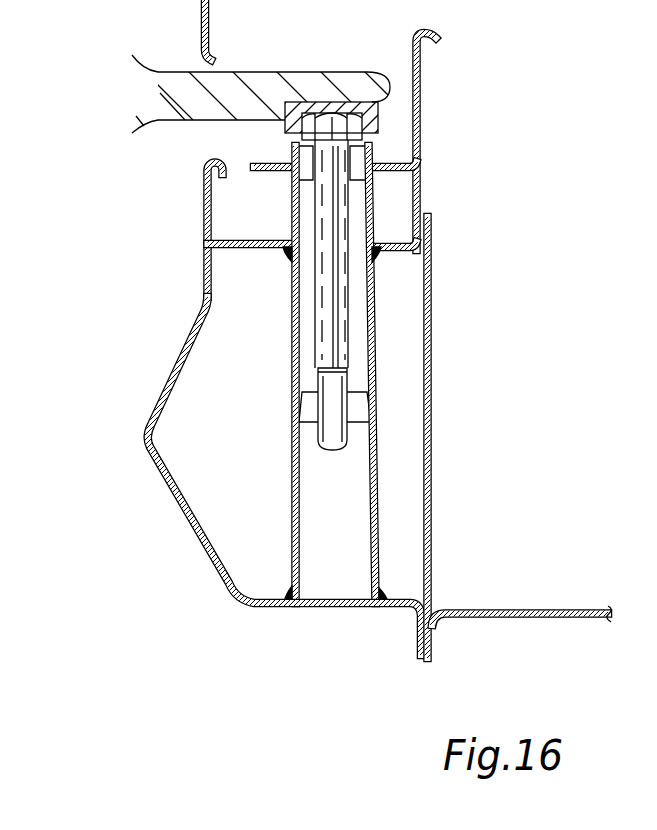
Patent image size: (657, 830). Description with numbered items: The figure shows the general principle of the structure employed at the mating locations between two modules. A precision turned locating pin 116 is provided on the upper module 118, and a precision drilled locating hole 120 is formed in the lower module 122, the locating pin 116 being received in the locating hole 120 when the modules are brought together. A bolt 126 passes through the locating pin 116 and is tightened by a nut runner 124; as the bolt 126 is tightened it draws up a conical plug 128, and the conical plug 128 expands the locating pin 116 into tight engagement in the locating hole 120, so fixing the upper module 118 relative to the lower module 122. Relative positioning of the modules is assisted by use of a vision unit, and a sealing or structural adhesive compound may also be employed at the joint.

The locating pin 116 is at (292, 210).
The upper module 118 is at (201, 18).
The locating hole 120 is at (290, 405).
The lower module 122 is at (208, 557).
The nut runner 124 is at (146, 98).
The bolt 126 is at (317, 302).
The conical plug 128 is at (357, 408).